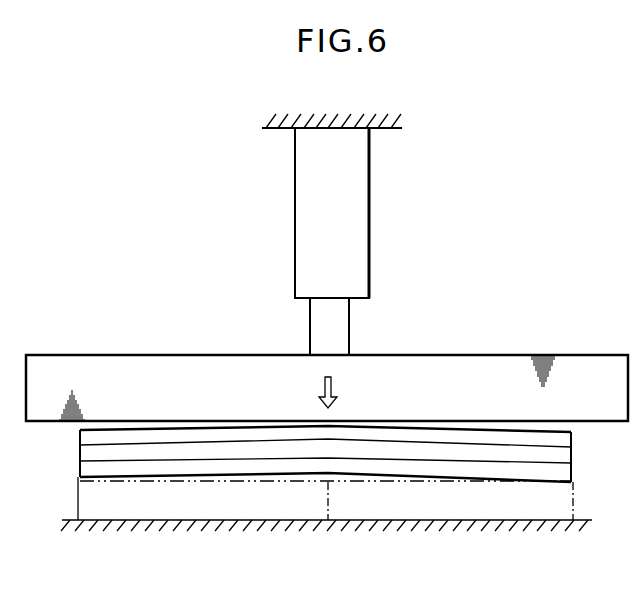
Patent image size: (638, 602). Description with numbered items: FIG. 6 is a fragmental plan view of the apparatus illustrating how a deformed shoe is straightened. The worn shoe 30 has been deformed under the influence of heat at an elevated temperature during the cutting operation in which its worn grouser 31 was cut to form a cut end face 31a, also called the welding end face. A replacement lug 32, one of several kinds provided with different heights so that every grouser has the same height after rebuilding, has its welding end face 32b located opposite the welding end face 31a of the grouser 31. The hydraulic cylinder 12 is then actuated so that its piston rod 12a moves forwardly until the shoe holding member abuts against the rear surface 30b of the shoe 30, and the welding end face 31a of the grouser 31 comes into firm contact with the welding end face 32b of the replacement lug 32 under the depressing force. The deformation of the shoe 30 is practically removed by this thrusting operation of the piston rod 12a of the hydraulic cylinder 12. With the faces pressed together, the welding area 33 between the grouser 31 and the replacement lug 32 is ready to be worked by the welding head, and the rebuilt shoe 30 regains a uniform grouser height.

The hydraulic cylinder 12 is at (362, 213).
The piston rod 12a is at (340, 331).
The worn shoe 30 is at (352, 440).
The rear surface of the shoe 30b is at (470, 429).
The grouser 31 is at (560, 477).
The cut end face of the grouser 31a is at (296, 472).
The replacement lug 32 is at (556, 511).
The welding end face of the replacement lug 32b is at (328, 521).
The welding area 33 is at (357, 473).